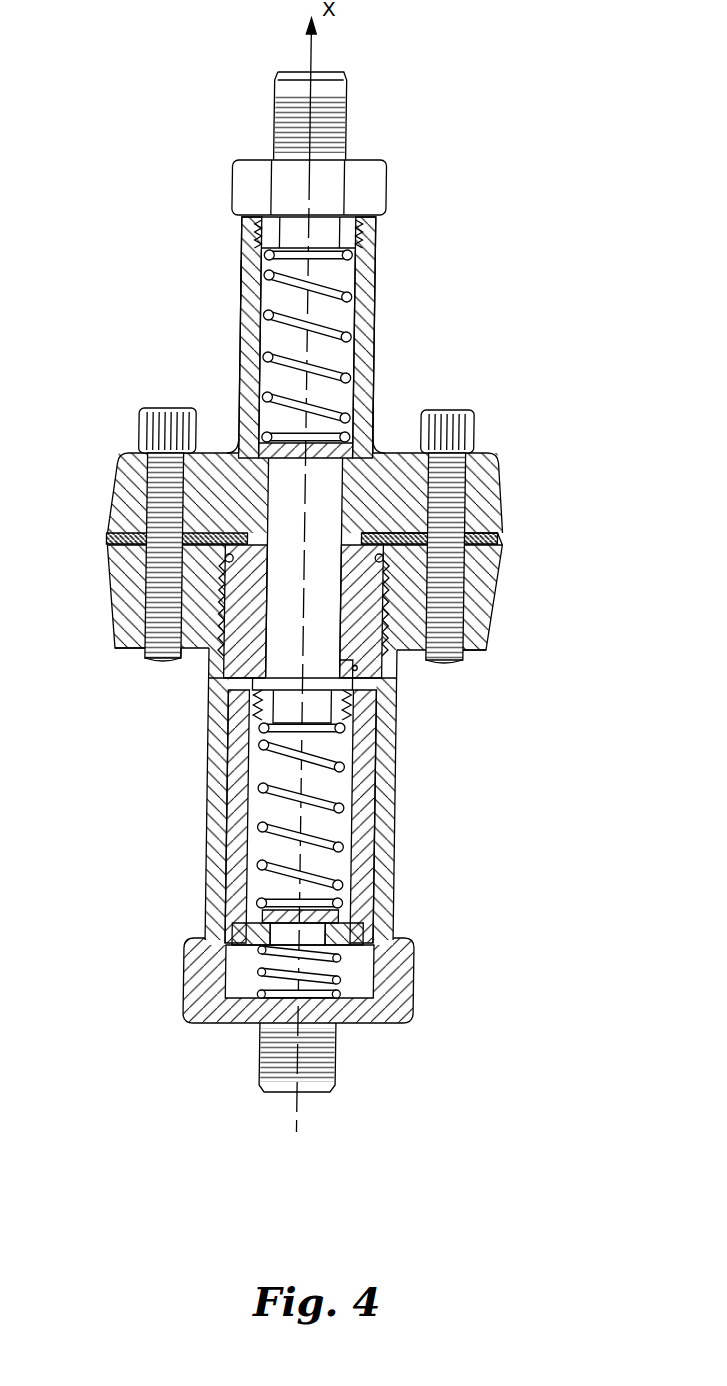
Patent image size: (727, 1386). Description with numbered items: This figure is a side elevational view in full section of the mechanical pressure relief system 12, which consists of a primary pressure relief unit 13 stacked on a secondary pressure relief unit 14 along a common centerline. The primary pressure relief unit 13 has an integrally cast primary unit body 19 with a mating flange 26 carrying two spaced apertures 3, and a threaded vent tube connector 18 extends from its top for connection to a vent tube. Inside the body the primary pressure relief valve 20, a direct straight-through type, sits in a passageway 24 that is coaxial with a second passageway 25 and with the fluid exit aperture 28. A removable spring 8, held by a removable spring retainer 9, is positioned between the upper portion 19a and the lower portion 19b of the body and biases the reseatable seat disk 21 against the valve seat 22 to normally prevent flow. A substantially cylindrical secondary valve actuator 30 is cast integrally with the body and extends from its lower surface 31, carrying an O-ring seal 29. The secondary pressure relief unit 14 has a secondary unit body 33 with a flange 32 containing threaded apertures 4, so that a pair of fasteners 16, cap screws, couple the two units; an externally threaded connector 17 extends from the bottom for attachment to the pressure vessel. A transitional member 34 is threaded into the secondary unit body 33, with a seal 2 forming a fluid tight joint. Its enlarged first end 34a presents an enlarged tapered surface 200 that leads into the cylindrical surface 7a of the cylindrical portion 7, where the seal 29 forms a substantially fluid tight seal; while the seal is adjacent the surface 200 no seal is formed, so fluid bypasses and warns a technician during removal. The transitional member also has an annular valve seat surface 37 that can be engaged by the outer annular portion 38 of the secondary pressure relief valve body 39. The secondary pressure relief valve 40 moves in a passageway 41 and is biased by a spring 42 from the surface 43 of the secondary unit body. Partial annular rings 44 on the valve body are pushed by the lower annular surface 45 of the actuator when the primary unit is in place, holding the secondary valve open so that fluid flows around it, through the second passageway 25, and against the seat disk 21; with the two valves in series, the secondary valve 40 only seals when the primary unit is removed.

The pressure relief system 12 is at (327, 582).
The threaded vent tube connector 18 is at (348, 98).
The fluid exit aperture 28 is at (294, 230).
The spring retainer 9 is at (372, 236).
The spring 8 is at (372, 284).
The primary unit body 19 is at (372, 368).
The upper portion of the primary unit body 19a is at (258, 280).
The lower portion of the primary unit body 19b is at (362, 437).
The primary pressure relief valve 20 is at (345, 318).
The passageway 24 is at (270, 298).
The reseatable seat disk 21 is at (270, 446).
The valve seat 22 is at (250, 448).
The primary pressure relief unit 13 is at (125, 487).
The mating flange 26 is at (494, 452).
The spaced apertures 3 is at (118, 517).
The flange 32 is at (118, 570).
The secondary pressure relief unit 14 is at (500, 562).
The lower surface of the primary unit body 31 is at (108, 538).
The first end of the transitional member 34a is at (398, 532).
The seal 2 is at (496, 535).
The fasteners 16 is at (162, 407).
The substantially cylindrical surface 7a is at (220, 652).
The cylindrical portion 7 is at (400, 655).
The second passageway 25 is at (235, 660).
The seal 29 is at (372, 702).
The transitional member 34 is at (430, 580).
The secondary valve actuator 30 is at (362, 668).
The lower annular surface 45 is at (385, 688).
The outer annular portion 38 is at (383, 728).
The partial annular rings 44 is at (388, 728).
The annular valve seat surface 37 is at (240, 690).
The enlarged tapered surface 200 is at (168, 660).
The threaded apertures 4 is at (145, 665).
The secondary unit body 33 is at (386, 818).
The secondary pressure relief valve body 39 is at (372, 800).
The passageway 41 is at (372, 896).
The secondary pressure relief valve 40 is at (258, 810).
The spring 42 is at (410, 955).
The surface 43 is at (396, 992).
The externally threaded connector 17 is at (330, 1092).